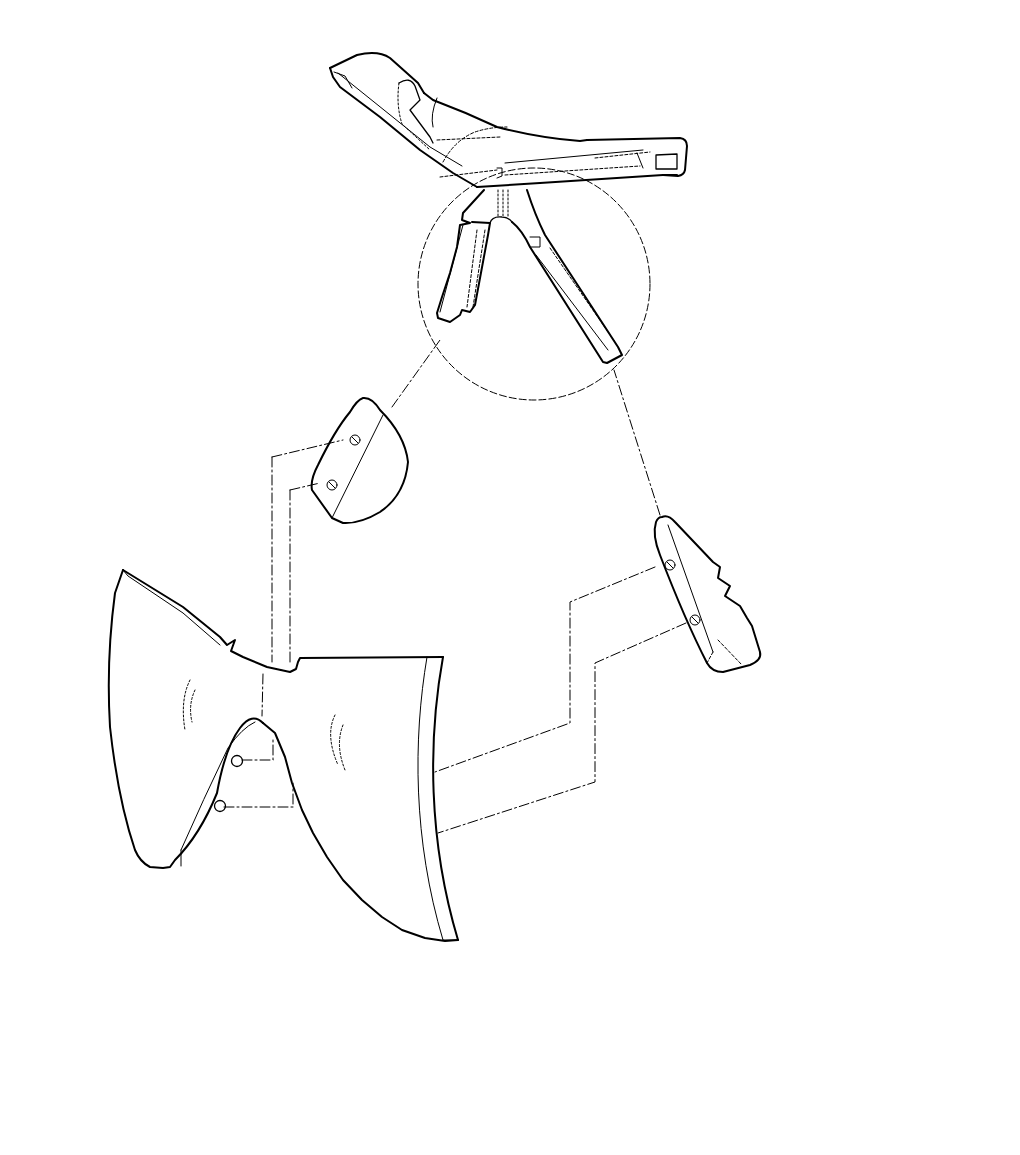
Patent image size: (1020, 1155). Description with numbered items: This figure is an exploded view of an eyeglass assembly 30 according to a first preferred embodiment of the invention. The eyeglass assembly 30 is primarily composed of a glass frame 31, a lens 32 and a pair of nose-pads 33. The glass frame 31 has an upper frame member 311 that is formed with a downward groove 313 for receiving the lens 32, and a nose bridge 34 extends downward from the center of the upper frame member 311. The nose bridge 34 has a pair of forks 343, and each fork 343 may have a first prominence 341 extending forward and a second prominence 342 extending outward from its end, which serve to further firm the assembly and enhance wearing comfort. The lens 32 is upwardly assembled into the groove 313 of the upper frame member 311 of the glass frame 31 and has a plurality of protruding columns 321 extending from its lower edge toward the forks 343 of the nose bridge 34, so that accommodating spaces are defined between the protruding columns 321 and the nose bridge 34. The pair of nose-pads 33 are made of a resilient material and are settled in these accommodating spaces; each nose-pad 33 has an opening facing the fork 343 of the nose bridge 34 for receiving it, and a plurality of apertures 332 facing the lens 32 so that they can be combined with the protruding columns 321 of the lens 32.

The eyeglass assembly 30 is at (222, 165).
The glass frame 31 is at (367, 73).
The upper frame member 311 is at (689, 147).
The downward groove 313 is at (681, 175).
The lens 32 is at (155, 835).
The protruding columns 321 is at (228, 806).
The nose-pads 33 is at (717, 555).
The apertures 332 is at (664, 562).
The nose bridge 34 is at (537, 400).
The first prominence 341 is at (450, 268).
The second prominence 342 is at (440, 316).
The forks 343 is at (614, 322).